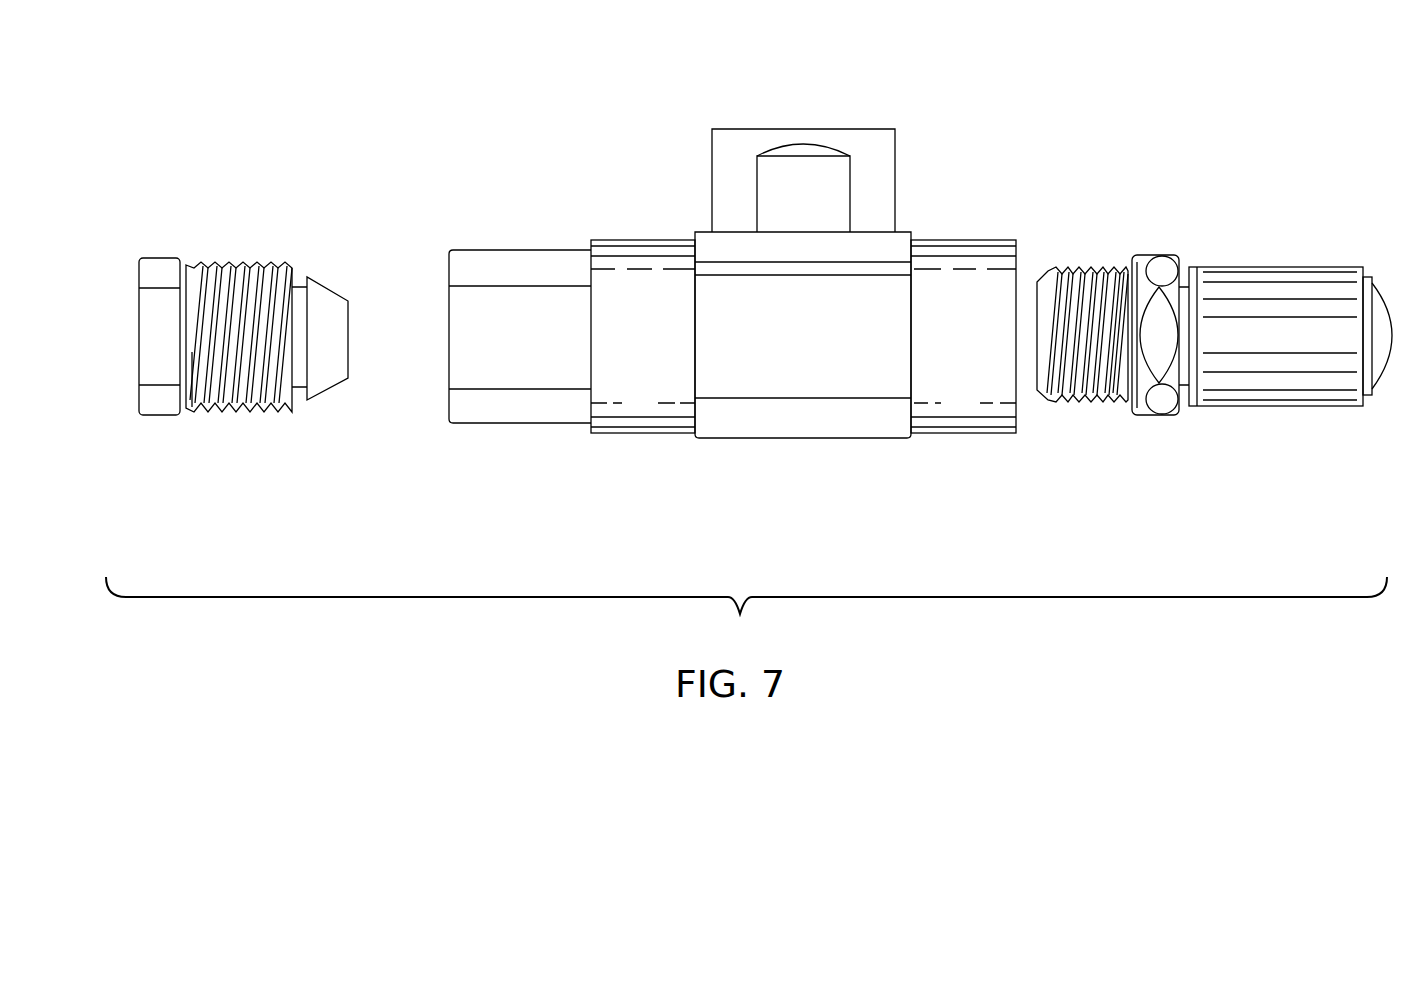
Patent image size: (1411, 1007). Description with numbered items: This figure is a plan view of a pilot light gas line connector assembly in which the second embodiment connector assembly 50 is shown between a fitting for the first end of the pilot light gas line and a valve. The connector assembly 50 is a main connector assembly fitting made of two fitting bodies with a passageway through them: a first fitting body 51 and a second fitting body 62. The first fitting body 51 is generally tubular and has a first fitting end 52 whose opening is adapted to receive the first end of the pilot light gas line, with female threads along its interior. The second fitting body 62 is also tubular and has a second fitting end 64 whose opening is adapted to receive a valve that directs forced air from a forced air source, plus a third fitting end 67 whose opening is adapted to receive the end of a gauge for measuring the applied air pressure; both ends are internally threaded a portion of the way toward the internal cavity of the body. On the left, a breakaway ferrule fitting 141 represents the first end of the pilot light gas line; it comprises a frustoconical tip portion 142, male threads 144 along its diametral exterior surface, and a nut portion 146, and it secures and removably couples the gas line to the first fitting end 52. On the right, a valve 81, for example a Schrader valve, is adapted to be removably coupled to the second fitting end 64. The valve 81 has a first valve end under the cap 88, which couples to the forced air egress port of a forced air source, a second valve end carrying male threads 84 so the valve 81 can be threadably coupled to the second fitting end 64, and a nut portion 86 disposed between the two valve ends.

The second embodiment pilot light gas line connector assembly 50 is at (961, 128).
The first fitting body 51 is at (516, 270).
The first fitting end 52 is at (430, 317).
The second fitting body 62 is at (820, 385).
The second fitting end 64 is at (1036, 263).
The third fitting end 67 is at (778, 101).
The valve 81 is at (1267, 212).
The male threads 84 is at (1082, 402).
The nut portion 86 is at (1163, 405).
The cap 88 is at (1273, 382).
The breakaway ferrule fitting 141 is at (221, 226).
The frustoconical tip portion 142 is at (327, 373).
The male threads 144 is at (245, 410).
The nut portion 146 is at (157, 373).